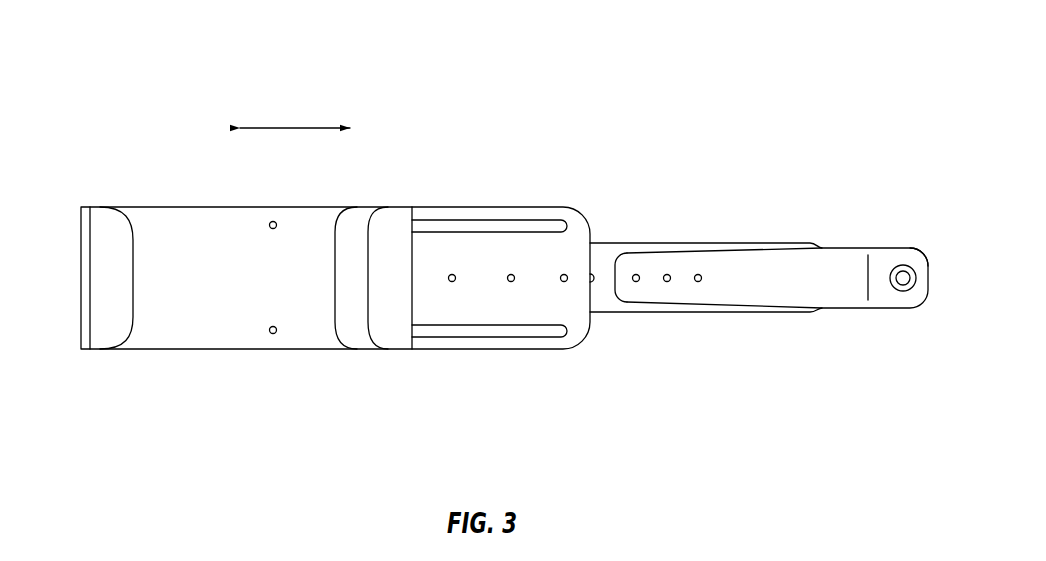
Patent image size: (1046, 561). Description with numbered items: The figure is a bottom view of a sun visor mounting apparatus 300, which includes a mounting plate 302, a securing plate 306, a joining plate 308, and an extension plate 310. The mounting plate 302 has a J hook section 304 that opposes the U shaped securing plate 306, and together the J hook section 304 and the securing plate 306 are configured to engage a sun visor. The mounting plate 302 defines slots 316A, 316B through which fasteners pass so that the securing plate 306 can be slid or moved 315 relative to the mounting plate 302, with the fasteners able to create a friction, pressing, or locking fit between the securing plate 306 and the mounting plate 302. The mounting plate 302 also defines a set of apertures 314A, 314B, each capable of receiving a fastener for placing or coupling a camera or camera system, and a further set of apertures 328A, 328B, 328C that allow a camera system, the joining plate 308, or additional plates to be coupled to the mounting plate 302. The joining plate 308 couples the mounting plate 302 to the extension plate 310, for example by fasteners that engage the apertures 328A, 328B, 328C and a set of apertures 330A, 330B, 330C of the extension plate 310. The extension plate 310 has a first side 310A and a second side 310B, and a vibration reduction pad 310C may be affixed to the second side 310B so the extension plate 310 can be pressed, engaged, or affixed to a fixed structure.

The sun visor mounting apparatus 300 is at (215, 428).
The mounting plate 302 is at (222, 207).
The J hook section 304 is at (103, 205).
The securing plate 306 is at (388, 333).
The joining plate 308 is at (602, 252).
The extension plate 310 is at (885, 270).
The first side 310A is at (728, 297).
The second side 310B is at (915, 250).
The vibration reduction pad 310C is at (903, 293).
The aperture 314A is at (273, 335).
The aperture 314B is at (273, 220).
The sliding movement 315 is at (297, 128).
The slot 316A is at (450, 214).
The slot 316B is at (452, 342).
The aperture 328A is at (456, 283).
The aperture 328B is at (515, 282).
The aperture 328C is at (566, 283).
The aperture 330A is at (698, 272).
The aperture 330B is at (667, 272).
The aperture 330C is at (636, 272).